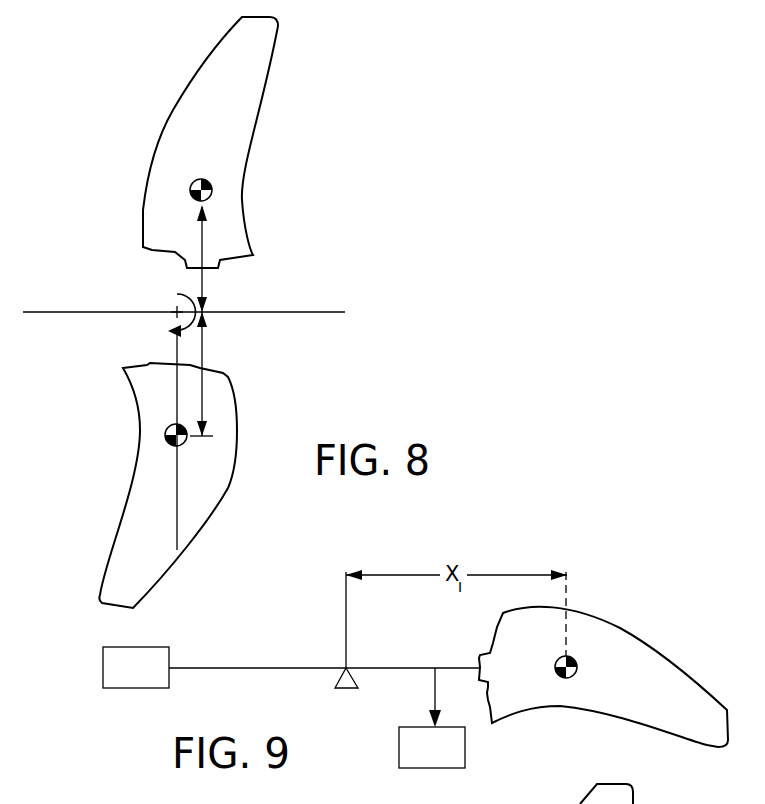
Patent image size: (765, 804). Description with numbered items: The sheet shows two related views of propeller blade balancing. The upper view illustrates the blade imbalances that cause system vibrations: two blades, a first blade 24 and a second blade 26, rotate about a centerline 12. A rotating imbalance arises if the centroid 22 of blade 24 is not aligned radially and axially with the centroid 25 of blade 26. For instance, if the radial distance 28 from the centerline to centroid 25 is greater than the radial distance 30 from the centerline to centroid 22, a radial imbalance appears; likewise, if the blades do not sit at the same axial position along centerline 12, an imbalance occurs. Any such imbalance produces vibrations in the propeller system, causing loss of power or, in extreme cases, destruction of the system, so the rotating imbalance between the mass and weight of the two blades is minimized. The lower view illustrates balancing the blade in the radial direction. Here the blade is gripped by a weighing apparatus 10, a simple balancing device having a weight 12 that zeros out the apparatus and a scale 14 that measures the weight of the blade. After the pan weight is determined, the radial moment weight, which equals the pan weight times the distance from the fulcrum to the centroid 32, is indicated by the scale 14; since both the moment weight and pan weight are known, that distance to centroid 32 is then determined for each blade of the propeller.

In FIG. 9, the weighing apparatus 10 is at (338, 695).
In FIG. 8, the centerline 12 is at (72, 310).
In FIG. 9, the centerline 12 is at (132, 693).
In FIG. 9, the scale 14 is at (425, 772).
In FIG. 8, the centroid 22 is at (215, 183).
In FIG. 8, the blade 24 is at (252, 145).
In FIG. 8, the centroid 25 is at (191, 442).
In FIG. 8, the blade 26 is at (216, 511).
In FIG. 8, the radial distance 28 is at (203, 342).
In FIG. 8, the radial distance 30 is at (203, 281).
In FIG. 9, the centroid 32 is at (580, 655).